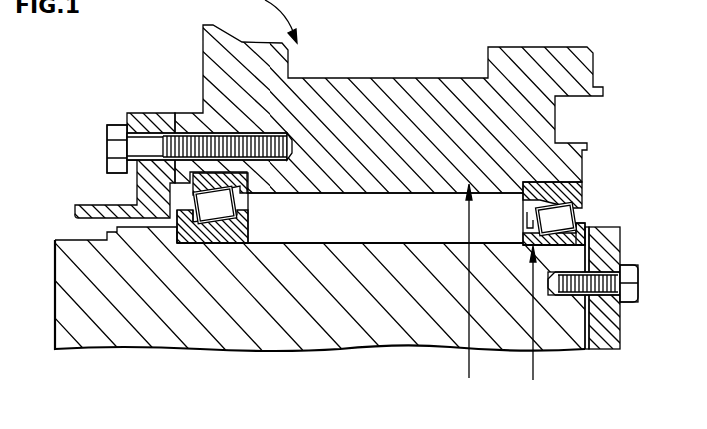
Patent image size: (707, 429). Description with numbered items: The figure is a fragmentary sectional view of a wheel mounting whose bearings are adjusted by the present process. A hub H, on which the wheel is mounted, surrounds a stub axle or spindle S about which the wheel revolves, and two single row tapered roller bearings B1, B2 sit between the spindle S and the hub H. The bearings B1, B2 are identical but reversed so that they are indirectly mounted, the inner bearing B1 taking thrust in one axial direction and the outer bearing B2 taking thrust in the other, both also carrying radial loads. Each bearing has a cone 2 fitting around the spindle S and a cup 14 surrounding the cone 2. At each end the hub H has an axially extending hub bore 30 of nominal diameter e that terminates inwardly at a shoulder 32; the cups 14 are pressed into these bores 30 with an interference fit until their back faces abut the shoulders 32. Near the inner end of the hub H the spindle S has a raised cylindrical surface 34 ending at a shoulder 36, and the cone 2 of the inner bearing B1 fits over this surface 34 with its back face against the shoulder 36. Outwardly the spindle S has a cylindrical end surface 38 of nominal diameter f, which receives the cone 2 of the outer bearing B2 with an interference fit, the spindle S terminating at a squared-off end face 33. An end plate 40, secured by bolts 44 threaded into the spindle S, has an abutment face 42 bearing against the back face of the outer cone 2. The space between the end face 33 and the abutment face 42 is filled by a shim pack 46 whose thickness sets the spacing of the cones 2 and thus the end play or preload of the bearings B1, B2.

The hub H is at (377, 95).
The cup 14 is at (203, 162).
The hub bore 30 is at (242, 180).
The shoulder 32 is at (242, 190).
The raised cylindrical surface 34 is at (222, 244).
The shoulder 36 is at (184, 242).
The inner bearing B1 is at (165, 196).
The outer bearing B2 is at (607, 185).
The abutment face 42 is at (550, 252).
The shim pack 46 is at (596, 238).
The spindle S is at (330, 322).
The cone 2 is at (240, 244).
The cylindrical end surface 38 is at (406, 243).
The end face 33 is at (590, 318).
The end plate 40 is at (621, 237).
The bolts 44 is at (634, 270).
The nominal diameter of hub bore e is at (466, 294).
The nominal diameter of cylindrical end surface f is at (526, 325).